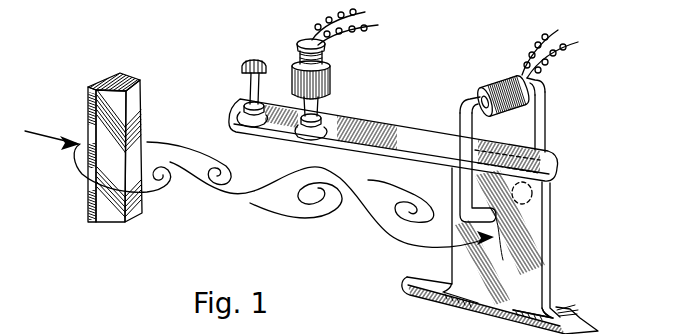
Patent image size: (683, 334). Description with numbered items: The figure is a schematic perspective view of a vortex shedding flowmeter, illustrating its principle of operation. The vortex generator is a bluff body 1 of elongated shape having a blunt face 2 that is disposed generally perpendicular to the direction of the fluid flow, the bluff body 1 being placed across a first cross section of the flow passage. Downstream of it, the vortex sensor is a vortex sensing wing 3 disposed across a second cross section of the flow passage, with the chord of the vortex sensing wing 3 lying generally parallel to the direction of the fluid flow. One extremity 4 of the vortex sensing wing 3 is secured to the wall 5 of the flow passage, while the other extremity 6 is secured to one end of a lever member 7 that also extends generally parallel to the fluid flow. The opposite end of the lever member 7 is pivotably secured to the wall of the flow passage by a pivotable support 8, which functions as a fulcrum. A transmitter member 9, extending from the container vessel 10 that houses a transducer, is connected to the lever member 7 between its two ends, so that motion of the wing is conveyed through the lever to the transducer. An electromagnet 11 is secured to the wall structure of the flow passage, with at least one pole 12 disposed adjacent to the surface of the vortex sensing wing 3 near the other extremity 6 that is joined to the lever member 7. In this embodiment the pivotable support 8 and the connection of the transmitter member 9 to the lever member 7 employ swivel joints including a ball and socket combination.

The bluff body 1 is at (118, 195).
The blunt face 2 is at (100, 77).
The vortex sensing wing 3 is at (508, 247).
The one extremity of the vortex sensing wing 4 is at (515, 302).
The wall of the flow passage 5 is at (447, 300).
The other extremity of the vortex sensing wing 6 is at (530, 201).
The lever member 7 is at (413, 143).
The pivotable support 8 is at (241, 73).
The transmitter member 9 is at (297, 104).
The container vessel 10 is at (312, 87).
The electromagnet 11 is at (540, 120).
The pole 12 is at (517, 275).